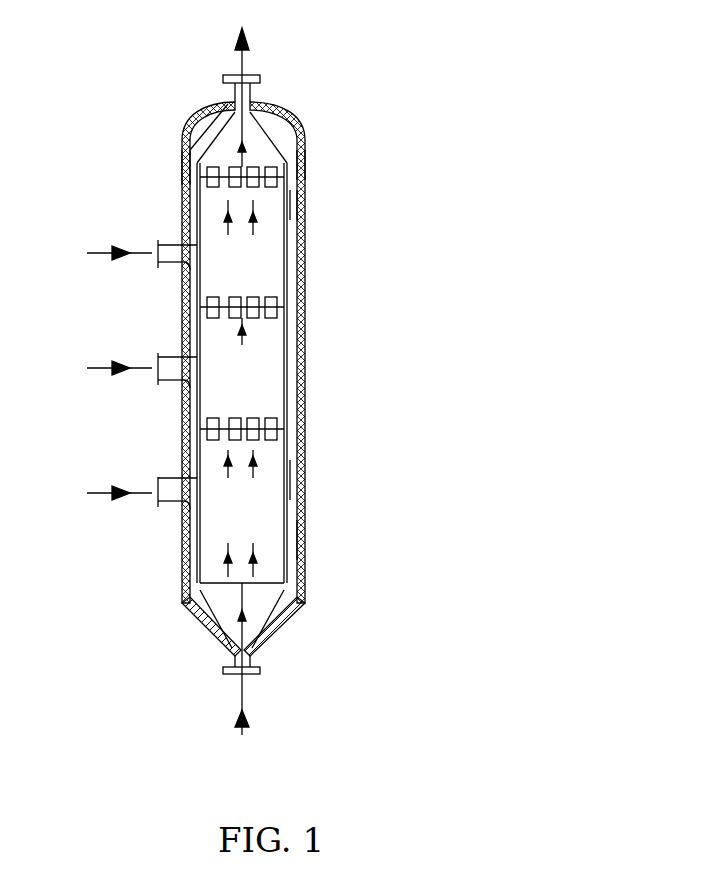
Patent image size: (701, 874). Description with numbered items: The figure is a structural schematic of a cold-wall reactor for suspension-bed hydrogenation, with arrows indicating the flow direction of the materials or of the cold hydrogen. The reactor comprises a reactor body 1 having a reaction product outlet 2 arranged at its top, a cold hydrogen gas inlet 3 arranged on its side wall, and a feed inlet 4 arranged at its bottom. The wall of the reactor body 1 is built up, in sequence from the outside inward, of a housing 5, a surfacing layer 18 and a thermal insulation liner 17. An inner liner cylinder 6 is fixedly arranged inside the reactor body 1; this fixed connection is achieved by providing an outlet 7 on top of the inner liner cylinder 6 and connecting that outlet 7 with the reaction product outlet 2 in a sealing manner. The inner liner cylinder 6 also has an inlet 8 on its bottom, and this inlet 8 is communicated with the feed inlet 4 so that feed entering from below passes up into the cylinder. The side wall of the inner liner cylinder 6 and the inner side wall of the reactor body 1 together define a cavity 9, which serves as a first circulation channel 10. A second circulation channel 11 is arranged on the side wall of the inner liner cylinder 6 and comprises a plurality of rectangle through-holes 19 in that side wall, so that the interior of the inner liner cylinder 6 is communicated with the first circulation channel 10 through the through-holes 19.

The reactor body 1 is at (272, 329).
The reaction product outlet 2 is at (279, 93).
The cold hydrogen gas inlet 3 is at (142, 462).
The feed inlet 4 is at (272, 659).
The housing 5 is at (191, 373).
The inner liner cylinder 6 is at (346, 480).
The outlet 7 is at (219, 103).
The inlet 8 is at (273, 623).
The cavity 9 is at (331, 186).
The first circulation channel 10 is at (338, 373).
The second circulation channel 11 is at (291, 261).
The thermal insulation liner 17 is at (342, 141).
The surfacing layer 18 is at (344, 540).
The rectangle through-holes 19 is at (145, 151).